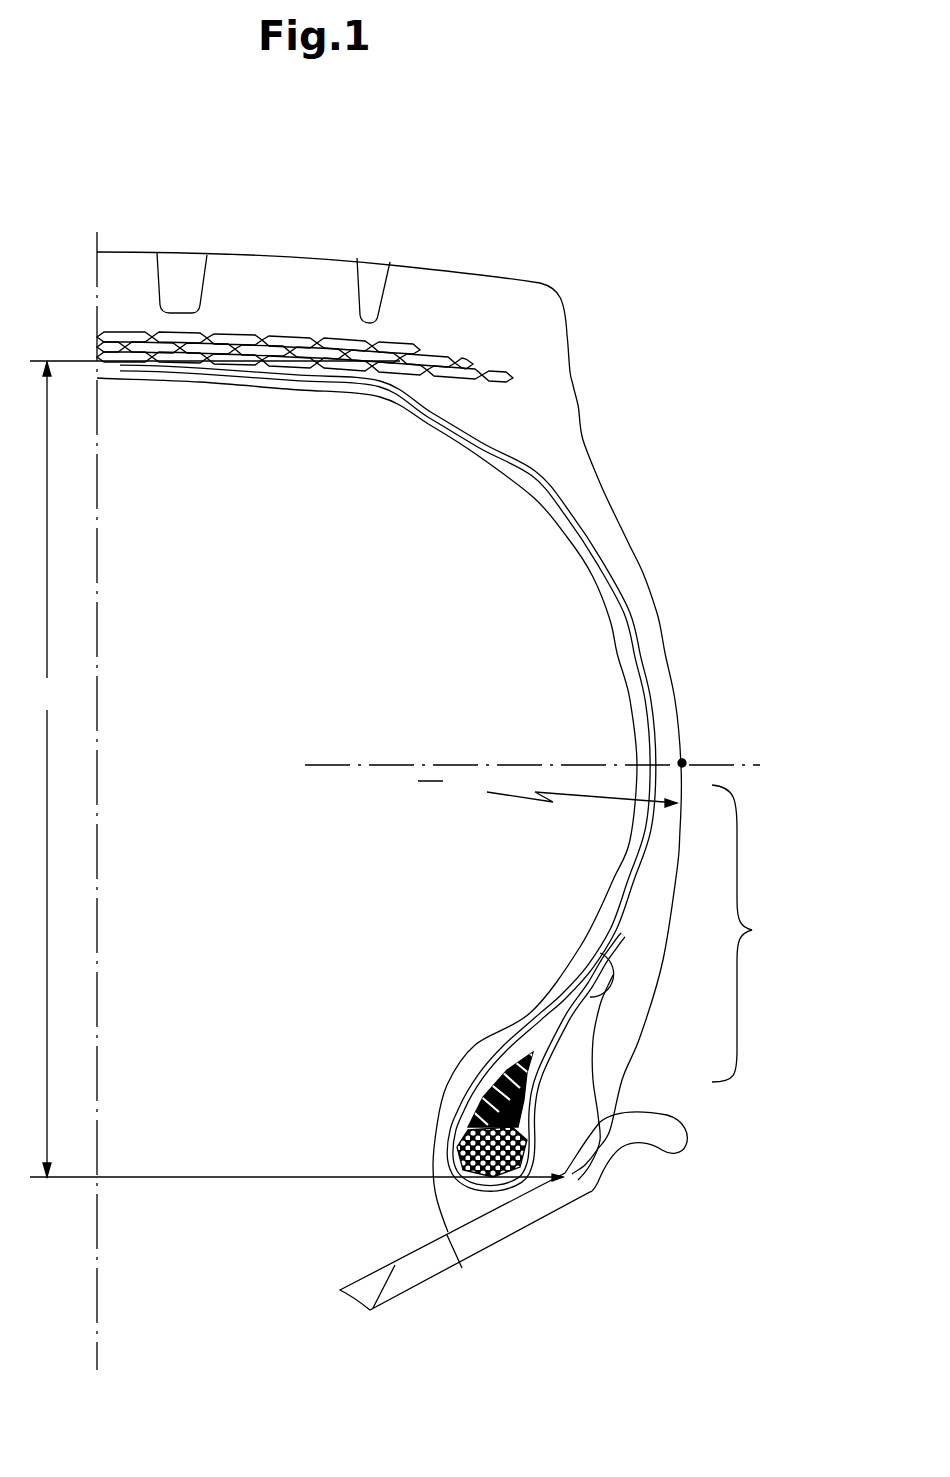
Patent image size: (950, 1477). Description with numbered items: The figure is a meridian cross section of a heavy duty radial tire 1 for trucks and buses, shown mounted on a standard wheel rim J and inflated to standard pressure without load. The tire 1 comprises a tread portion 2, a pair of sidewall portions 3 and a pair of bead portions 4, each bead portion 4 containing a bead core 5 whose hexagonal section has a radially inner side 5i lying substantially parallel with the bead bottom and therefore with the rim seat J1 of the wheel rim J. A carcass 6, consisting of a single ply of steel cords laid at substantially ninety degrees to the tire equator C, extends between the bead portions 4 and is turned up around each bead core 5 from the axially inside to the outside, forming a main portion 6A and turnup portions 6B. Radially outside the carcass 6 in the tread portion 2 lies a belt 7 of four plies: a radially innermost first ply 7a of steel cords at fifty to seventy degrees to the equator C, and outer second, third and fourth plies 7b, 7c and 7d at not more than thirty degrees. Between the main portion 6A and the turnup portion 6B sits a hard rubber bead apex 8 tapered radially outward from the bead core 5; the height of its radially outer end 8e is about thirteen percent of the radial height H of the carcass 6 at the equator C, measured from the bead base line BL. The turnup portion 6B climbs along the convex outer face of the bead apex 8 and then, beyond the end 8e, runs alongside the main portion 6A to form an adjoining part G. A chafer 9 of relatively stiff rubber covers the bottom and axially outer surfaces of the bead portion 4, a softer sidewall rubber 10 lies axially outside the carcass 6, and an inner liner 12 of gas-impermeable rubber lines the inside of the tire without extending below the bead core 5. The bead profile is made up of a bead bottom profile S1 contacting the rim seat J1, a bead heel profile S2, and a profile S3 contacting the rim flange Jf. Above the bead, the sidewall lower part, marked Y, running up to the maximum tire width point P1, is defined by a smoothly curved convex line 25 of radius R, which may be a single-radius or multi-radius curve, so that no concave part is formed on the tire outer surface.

The heavy duty tire 1 is at (645, 410).
The tread portion 2 is at (297, 245).
The sidewall portion 3 is at (683, 614).
The bead portion 4 is at (423, 1183).
The bead core 5 is at (455, 1150).
The radially inner side 5i is at (503, 1183).
The carcass 6 is at (455, 862).
The main portion 6A is at (647, 845).
The turnup portion 6B is at (598, 1000).
The belt 7 is at (305, 430).
The first ply 7a is at (408, 422).
The second ply 7b is at (320, 360).
The third ply 7c is at (268, 345).
The fourth ply 7d is at (239, 334).
The bead apex 8 is at (495, 1108).
The radially outer end 8e is at (518, 1052).
The chafer 9 is at (557, 1073).
The sidewall rubber 10 is at (655, 945).
The inner liner 12 is at (598, 572).
The convex line 25 is at (680, 856).
The adjoining part G is at (583, 963).
The radial height H is at (215, 769).
The radius of curvature of sidewall R is at (547, 791).
The maximum tire width point P1 is at (684, 760).
The lower sidewall region Y is at (743, 933).
The tire equator C is at (106, 200).
The bead base line BL is at (186, 1178).
The wheel rim J is at (543, 1220).
The rim seat J1 is at (430, 1240).
The rim flange Jf is at (688, 1138).
The bead bottom profile S1 is at (475, 1223).
The bead heel profile S2 is at (597, 1192).
The rim flange contacting profile S3 is at (600, 1168).